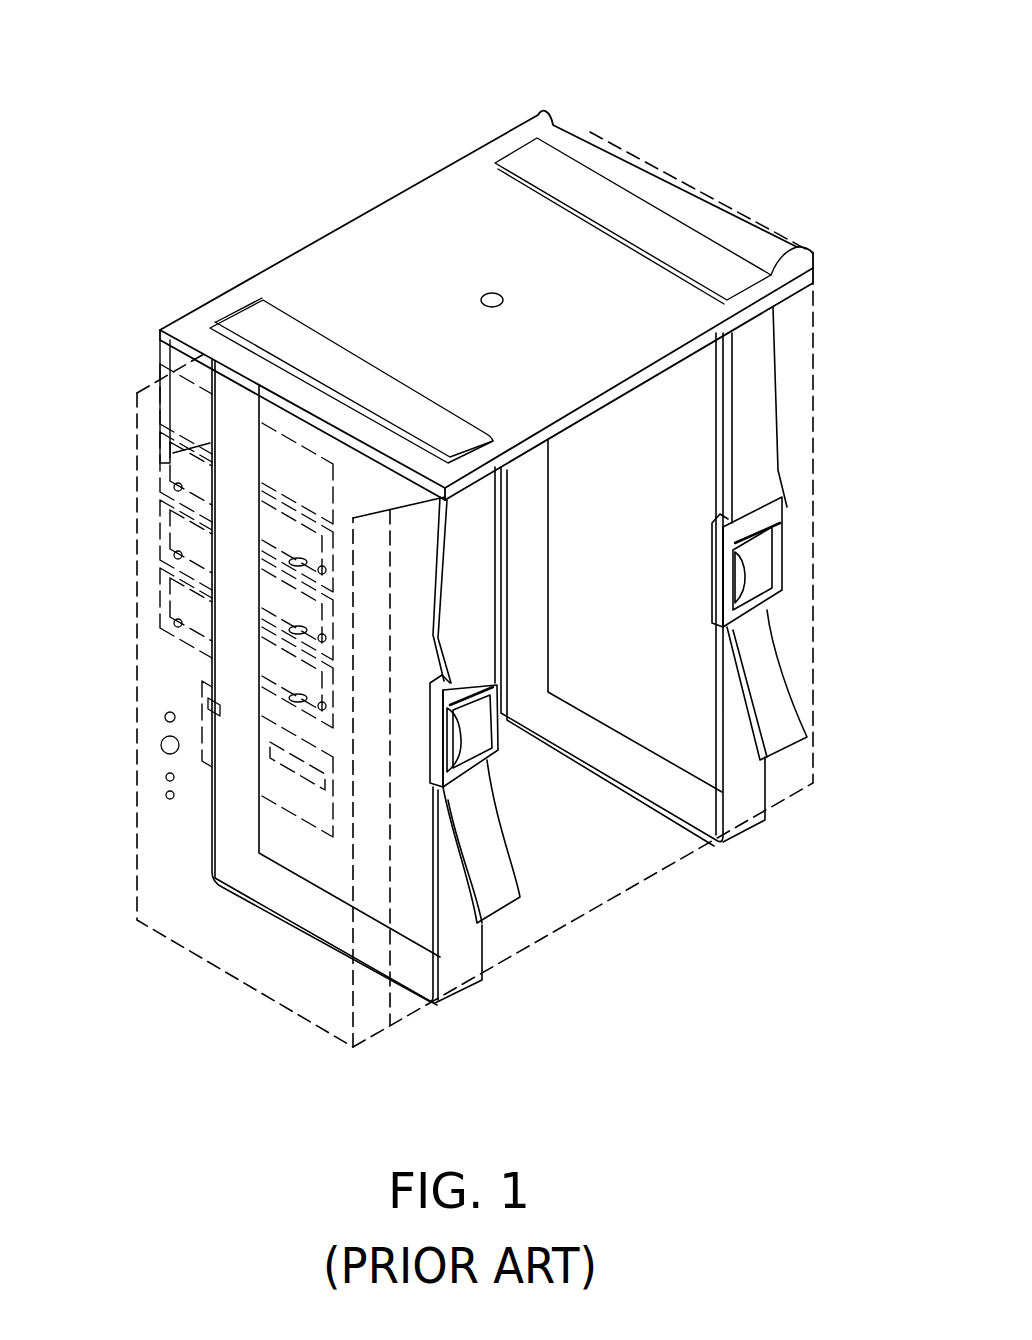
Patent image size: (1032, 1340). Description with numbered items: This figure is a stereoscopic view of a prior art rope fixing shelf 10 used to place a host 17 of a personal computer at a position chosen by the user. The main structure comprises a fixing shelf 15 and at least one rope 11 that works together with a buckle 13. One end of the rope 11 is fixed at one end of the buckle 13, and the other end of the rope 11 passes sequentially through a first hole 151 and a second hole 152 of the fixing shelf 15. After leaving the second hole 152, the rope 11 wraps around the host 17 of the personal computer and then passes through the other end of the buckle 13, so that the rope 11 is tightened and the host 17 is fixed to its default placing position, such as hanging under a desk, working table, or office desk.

The rope fixing shelf 10 is at (530, 502).
The rope 11 is at (804, 525).
The buckle 13 is at (780, 583).
The fixing shelf 15 is at (530, 276).
The first hole 151 is at (800, 258).
The second hole 152 is at (540, 117).
The host of a personal computer 17 is at (133, 660).